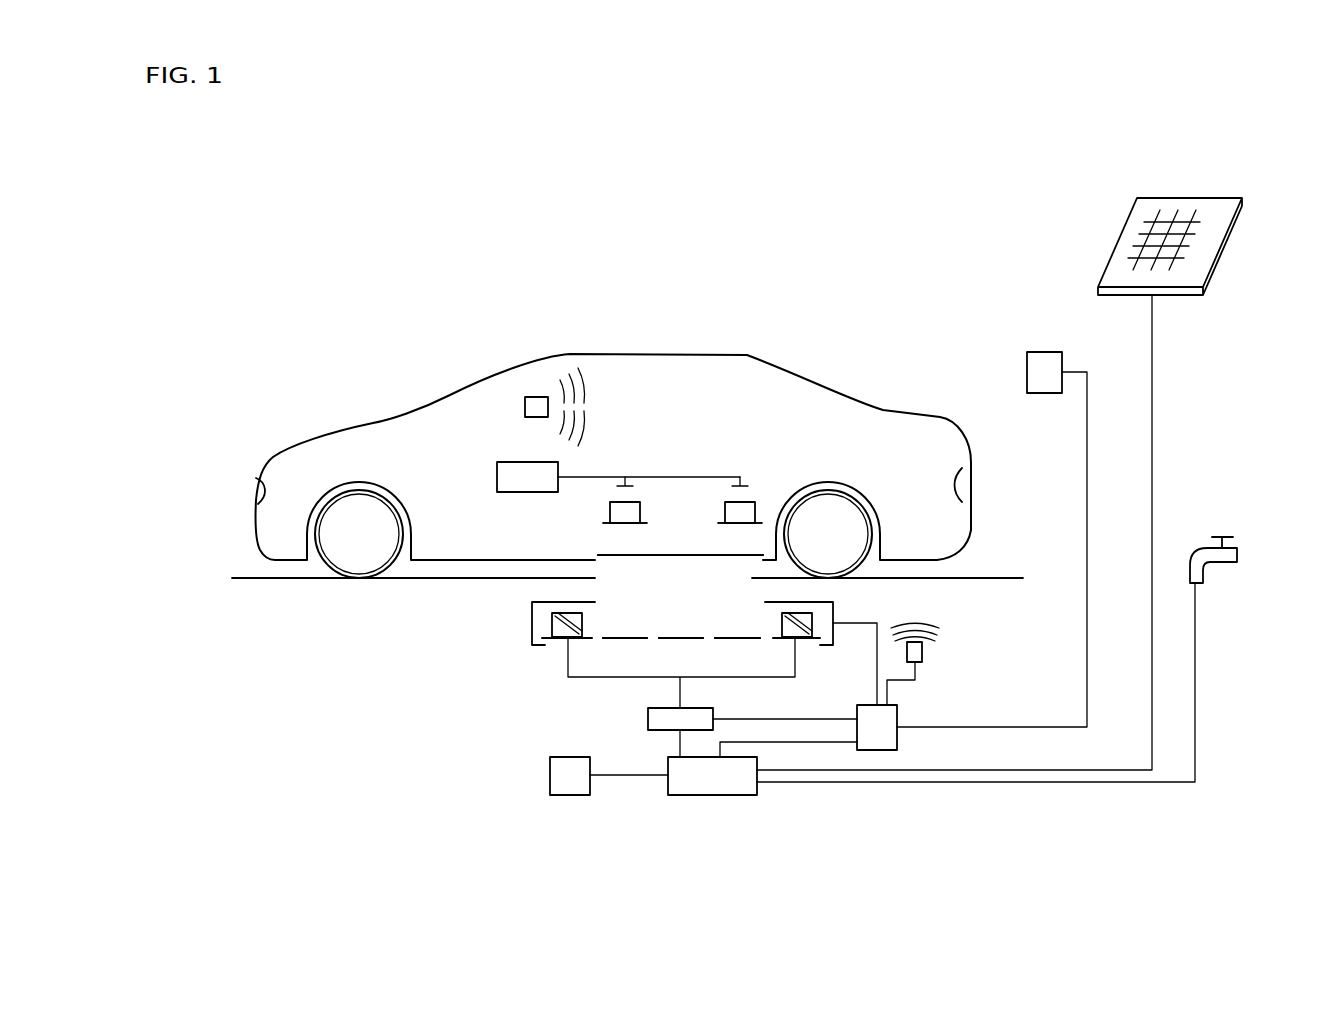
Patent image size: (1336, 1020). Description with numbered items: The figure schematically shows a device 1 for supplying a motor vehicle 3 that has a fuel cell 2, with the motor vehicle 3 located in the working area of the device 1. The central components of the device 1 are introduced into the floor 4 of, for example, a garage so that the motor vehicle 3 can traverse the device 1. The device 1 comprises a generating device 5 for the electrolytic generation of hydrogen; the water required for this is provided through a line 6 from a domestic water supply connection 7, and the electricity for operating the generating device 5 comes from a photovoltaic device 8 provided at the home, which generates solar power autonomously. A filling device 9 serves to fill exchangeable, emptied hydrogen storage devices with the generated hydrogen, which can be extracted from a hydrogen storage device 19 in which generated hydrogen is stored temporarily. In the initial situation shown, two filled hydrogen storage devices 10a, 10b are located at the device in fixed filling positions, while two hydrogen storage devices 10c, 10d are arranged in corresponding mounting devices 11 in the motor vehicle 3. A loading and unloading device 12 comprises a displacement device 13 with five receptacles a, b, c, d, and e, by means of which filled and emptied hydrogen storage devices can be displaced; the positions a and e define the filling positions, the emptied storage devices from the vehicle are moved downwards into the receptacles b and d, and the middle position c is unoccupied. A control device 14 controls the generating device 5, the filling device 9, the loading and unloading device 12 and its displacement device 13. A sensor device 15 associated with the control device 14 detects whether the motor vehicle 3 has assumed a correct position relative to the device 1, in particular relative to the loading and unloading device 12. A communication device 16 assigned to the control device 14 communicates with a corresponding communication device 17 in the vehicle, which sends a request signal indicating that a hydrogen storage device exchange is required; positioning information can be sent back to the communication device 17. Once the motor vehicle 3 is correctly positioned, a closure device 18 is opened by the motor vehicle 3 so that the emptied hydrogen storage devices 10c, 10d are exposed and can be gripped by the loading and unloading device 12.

The device 1 is at (440, 690).
The fuel cell 2 is at (517, 462).
The motor vehicle 3 is at (470, 362).
The floor 4 is at (305, 580).
The generating device 5 is at (668, 788).
The line 6 is at (1196, 655).
The domestic water supply connection 7 is at (1196, 548).
The photovoltaic device 8 is at (1120, 242).
The filling device 9 is at (648, 720).
The hydrogen storage device 10a is at (582, 624).
The hydrogen storage device 10b is at (814, 622).
The hydrogen storage device 10c is at (610, 507).
The hydrogen storage device 10d is at (746, 502).
The mounting devices 11 is at (722, 525).
The loading and unloading device 12 is at (553, 677).
The displacement device 13 is at (662, 617).
The control device 14 is at (897, 741).
The sensor device 15 is at (1027, 373).
The communication device 16 is at (922, 652).
The communication device 17 is at (537, 396).
The closure device 18 is at (598, 556).
The hydrogen storage device 19 is at (550, 790).
The receptacle a is at (556, 643).
The receptacle b is at (632, 642).
The receptacle c is at (690, 642).
The receptacle d is at (745, 642).
The receptacle e is at (782, 642).